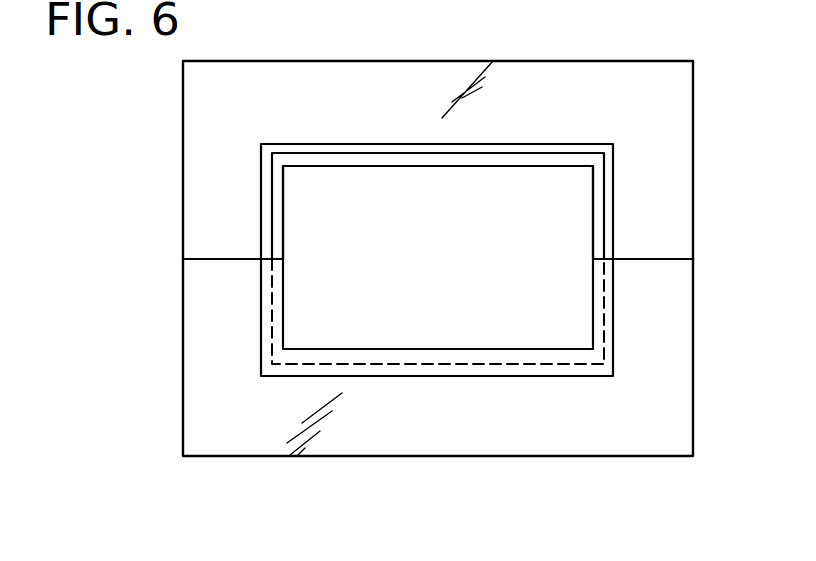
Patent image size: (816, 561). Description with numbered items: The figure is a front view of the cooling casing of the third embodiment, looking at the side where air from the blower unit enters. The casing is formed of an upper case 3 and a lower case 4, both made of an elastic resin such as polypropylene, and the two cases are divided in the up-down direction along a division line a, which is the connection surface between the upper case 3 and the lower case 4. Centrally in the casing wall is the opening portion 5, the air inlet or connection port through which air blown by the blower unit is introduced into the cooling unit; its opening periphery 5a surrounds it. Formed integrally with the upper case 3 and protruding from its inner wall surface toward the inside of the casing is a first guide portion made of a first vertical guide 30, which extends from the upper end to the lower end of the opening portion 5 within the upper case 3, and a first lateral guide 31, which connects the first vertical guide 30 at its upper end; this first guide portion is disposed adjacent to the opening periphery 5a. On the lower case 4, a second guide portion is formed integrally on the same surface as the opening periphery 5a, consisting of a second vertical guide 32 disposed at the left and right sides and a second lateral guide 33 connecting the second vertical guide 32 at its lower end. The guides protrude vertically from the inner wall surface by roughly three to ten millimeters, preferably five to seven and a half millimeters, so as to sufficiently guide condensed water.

The upper case 3 is at (228, 90).
The lower case 4 is at (218, 390).
The division line a is at (220, 259).
The opening portion 5 is at (300, 213).
The opening periphery 5a is at (606, 185).
The first vertical guide 30 is at (277, 230).
The first lateral guide 31 is at (567, 158).
The second vertical guide 32 is at (277, 318).
The second lateral guide 33 is at (497, 358).